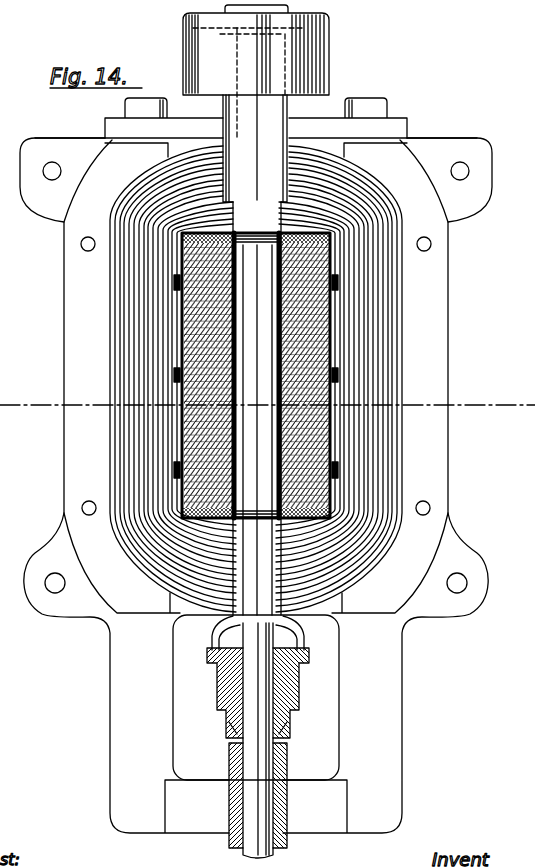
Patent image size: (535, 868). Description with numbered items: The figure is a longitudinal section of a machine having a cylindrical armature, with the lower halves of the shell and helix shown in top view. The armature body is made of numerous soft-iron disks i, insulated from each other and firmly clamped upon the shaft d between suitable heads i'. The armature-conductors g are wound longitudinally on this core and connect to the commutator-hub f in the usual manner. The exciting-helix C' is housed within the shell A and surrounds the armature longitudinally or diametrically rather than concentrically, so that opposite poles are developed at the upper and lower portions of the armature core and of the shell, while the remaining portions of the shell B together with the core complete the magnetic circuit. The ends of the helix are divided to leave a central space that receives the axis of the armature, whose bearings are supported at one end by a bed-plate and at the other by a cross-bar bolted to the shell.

The shell A is at (440, 318).
The frame B is at (96, 381).
The exciting-helix C' is at (256, 379).
The shaft d is at (256, 431).
The commutator-hub f is at (301, 701).
The armature-conductors g is at (181, 406).
The armature core i is at (299, 390).
The core end plate i' is at (286, 372).